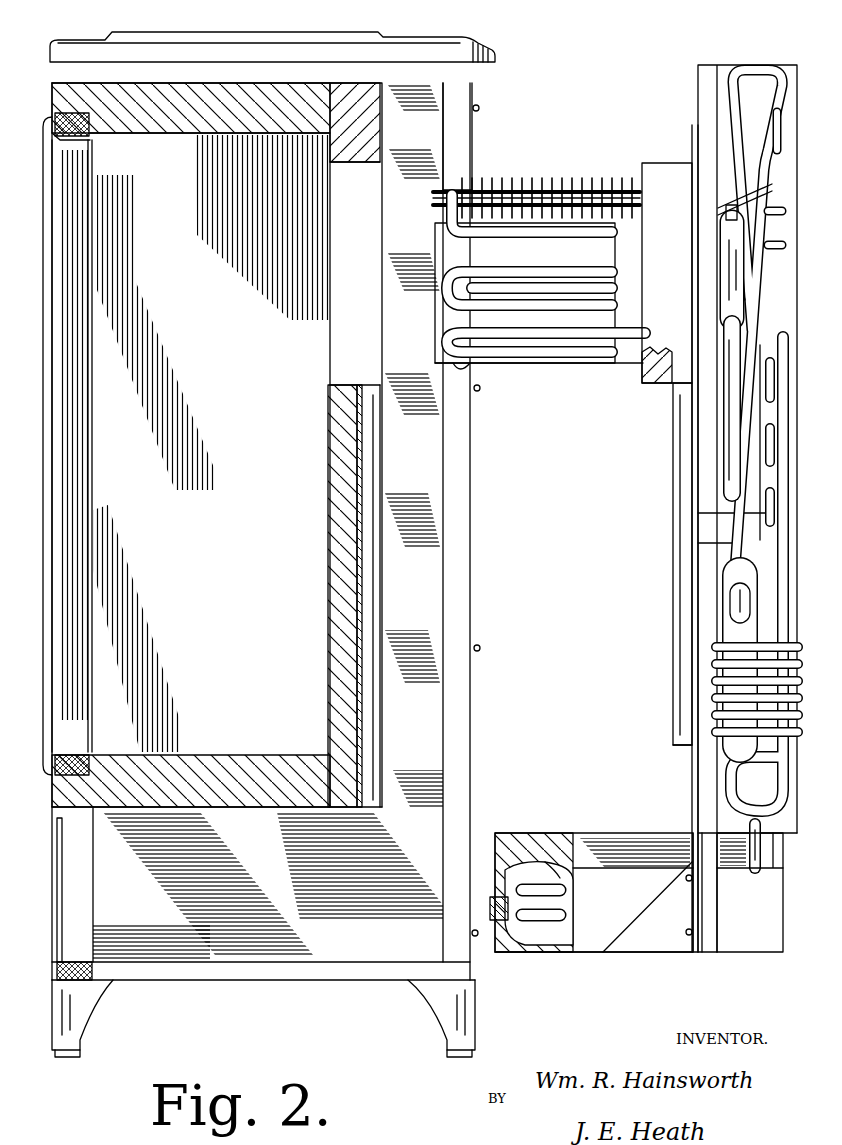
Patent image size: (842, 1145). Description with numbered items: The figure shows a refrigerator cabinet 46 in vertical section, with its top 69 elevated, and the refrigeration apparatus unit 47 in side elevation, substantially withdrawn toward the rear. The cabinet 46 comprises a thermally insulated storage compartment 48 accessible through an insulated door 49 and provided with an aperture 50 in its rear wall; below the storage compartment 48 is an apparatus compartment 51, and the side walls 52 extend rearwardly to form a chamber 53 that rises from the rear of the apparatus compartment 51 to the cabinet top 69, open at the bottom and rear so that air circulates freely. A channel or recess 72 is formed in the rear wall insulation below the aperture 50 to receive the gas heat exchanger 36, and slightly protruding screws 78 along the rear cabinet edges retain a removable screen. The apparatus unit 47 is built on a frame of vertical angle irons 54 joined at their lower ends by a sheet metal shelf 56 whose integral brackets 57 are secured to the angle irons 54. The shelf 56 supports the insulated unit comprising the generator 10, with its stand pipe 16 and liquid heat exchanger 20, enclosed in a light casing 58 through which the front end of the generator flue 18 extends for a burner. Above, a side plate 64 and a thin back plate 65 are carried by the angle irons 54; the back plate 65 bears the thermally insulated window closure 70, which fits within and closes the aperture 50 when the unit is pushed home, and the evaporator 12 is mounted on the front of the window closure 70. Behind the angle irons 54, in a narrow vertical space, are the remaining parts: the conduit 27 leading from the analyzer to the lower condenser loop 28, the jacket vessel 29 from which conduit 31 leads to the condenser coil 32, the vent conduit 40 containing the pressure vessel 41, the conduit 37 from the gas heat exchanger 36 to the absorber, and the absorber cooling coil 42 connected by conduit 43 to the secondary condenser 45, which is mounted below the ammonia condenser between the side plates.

The generator 10 is at (518, 950).
The evaporator 12 is at (568, 352).
The stand pipe 16 is at (560, 858).
The generator flue 18 is at (494, 898).
The liquid heat exchanger 20 is at (562, 887).
The conduit 27 is at (743, 332).
The lower condenser loop 28 is at (759, 214).
The vessel or jacket 29 is at (745, 316).
The conduit 31 is at (740, 72).
The condenser coil 32 is at (775, 118).
The gas heat exchanger 36 is at (680, 572).
The conduit 37 is at (685, 748).
The conduit 40 is at (760, 277).
The pressure vessel 41 is at (730, 612).
The absorber cooling coil 42 is at (713, 745).
The conduit 43 is at (778, 558).
The condenser 45 is at (765, 458).
The refrigerator cabinet 46 is at (250, 992).
The refrigeration apparatus unit 47 is at (688, 958).
The storage compartment 48 is at (137, 235).
The insulated door 49 is at (57, 617).
The aperture 50 is at (337, 367).
The apparatus compartment 51 is at (165, 945).
The side walls 52 is at (450, 80).
The rear apparatus chamber 53 is at (432, 566).
The vertical angle irons 54 is at (707, 943).
The sheet metal shelf 56 is at (600, 952).
The brackets 57 is at (660, 942).
The casing 58 is at (752, 938).
The side plate 64 is at (725, 110).
The back plate 65 is at (692, 153).
The top cap 69 is at (378, 34).
The window closure 70 is at (648, 167).
The channel or recess 72 is at (375, 470).
The screws 78 is at (480, 107).